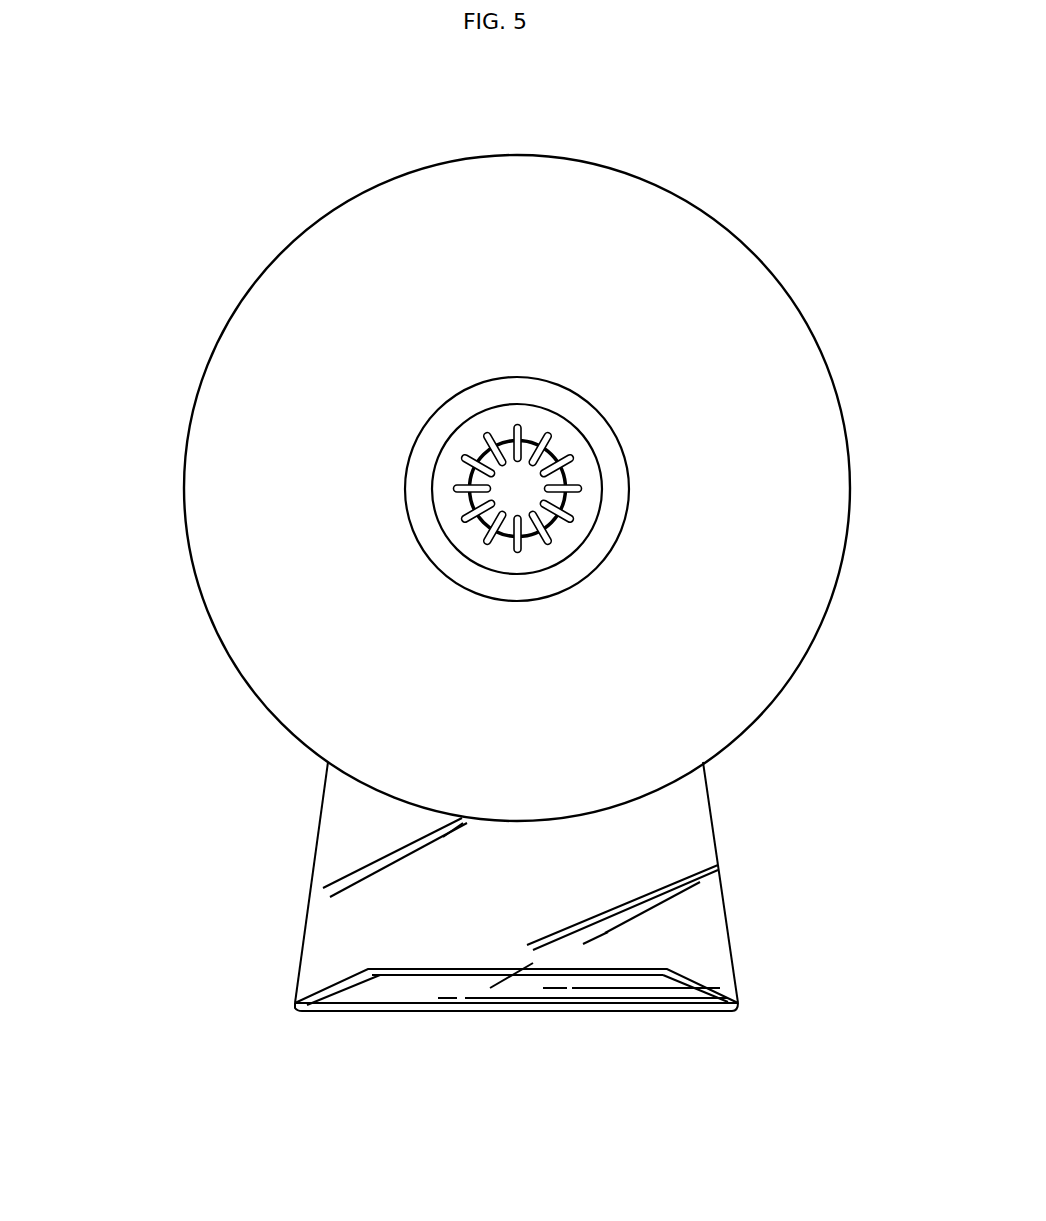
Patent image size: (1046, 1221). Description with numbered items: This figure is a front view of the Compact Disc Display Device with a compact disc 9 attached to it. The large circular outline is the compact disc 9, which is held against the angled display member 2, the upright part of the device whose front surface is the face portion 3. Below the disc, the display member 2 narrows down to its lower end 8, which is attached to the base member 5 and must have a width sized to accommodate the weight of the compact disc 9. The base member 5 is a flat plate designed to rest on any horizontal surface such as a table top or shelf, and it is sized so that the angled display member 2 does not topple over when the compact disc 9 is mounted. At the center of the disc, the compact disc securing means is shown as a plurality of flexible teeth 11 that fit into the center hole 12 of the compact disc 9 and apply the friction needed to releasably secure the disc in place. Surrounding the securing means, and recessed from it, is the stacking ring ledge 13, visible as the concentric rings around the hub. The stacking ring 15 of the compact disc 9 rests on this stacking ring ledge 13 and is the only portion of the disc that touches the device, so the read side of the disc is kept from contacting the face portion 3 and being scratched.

The compact disc 9 is at (256, 250).
The stacking ring 15 is at (460, 369).
The flexible teeth 11 is at (540, 430).
The center hole 12 is at (586, 470).
The stacking ring ledge 13 is at (428, 472).
The display member 2 is at (299, 809).
The face portion 3 is at (342, 920).
The lower end 8 is at (530, 948).
The base member 5 is at (718, 970).